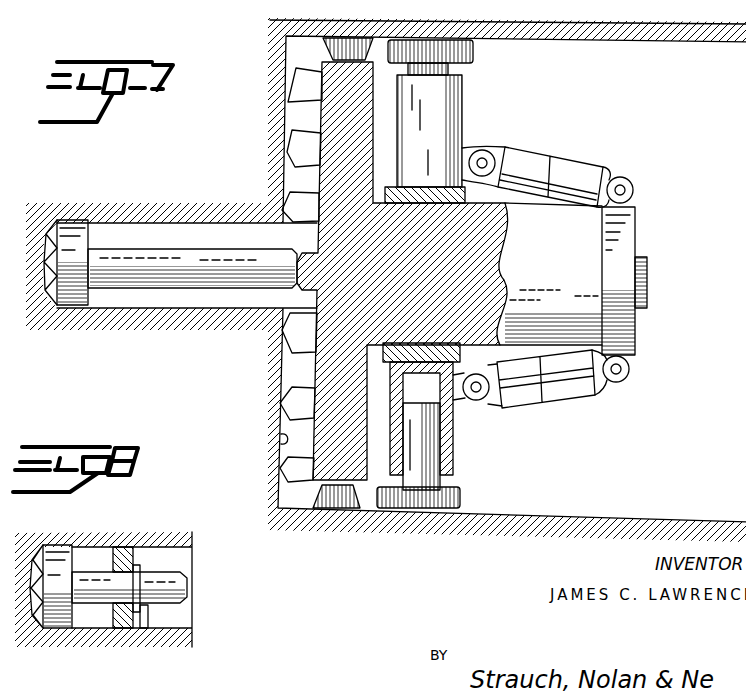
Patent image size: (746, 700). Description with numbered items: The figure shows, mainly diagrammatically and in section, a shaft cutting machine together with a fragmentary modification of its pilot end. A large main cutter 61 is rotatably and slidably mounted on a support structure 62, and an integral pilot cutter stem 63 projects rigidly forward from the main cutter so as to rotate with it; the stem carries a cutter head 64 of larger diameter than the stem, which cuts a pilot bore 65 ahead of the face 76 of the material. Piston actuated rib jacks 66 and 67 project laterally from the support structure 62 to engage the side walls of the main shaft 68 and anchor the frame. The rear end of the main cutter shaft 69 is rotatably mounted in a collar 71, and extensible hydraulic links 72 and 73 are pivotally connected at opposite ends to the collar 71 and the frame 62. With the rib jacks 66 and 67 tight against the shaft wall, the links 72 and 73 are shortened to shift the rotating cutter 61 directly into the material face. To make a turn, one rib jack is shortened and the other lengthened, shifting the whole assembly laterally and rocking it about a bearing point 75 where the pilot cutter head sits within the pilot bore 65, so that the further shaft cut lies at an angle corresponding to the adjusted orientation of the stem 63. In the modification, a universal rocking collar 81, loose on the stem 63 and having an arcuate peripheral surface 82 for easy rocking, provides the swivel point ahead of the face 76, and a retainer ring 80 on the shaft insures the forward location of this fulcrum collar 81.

In FIG. 7, the main cutter 61 is at (372, 130).
In FIG. 7, the support structure 62 is at (465, 198).
In FIG. 7, the pilot cutter stem 63 is at (236, 231).
In FIG. 8, the pilot cutter stem 63 is at (160, 573).
In FIG. 7, the cutter head 64 is at (62, 305).
In FIG. 8, the cutter head 64 is at (53, 628).
In FIG. 7, the pilot bore 65 is at (192, 303).
In FIG. 8, the pilot bore 65 is at (117, 633).
In FIG. 7, the rib jack 66 is at (462, 115).
In FIG. 7, the rib jack 67 is at (437, 458).
In FIG. 7, the main shaft 68 is at (553, 43).
In FIG. 7, the main cutter shaft 69 is at (502, 238).
In FIG. 7, the collar 71 is at (636, 210).
In FIG. 7, the extensible hydraulic link 72 is at (556, 154).
In FIG. 7, the extensible hydraulic link 73 is at (542, 406).
In FIG. 7, the bearing point 75 is at (70, 252).
In FIG. 8, the bearing point 75 is at (60, 560).
In FIG. 7, the face 76 is at (281, 444).
In FIG. 8, the retainer ring 80 is at (138, 628).
In FIG. 8, the universal rocking collar 81 is at (127, 547).
In FIG. 8, the arcuate peripheral surface 82 is at (115, 547).